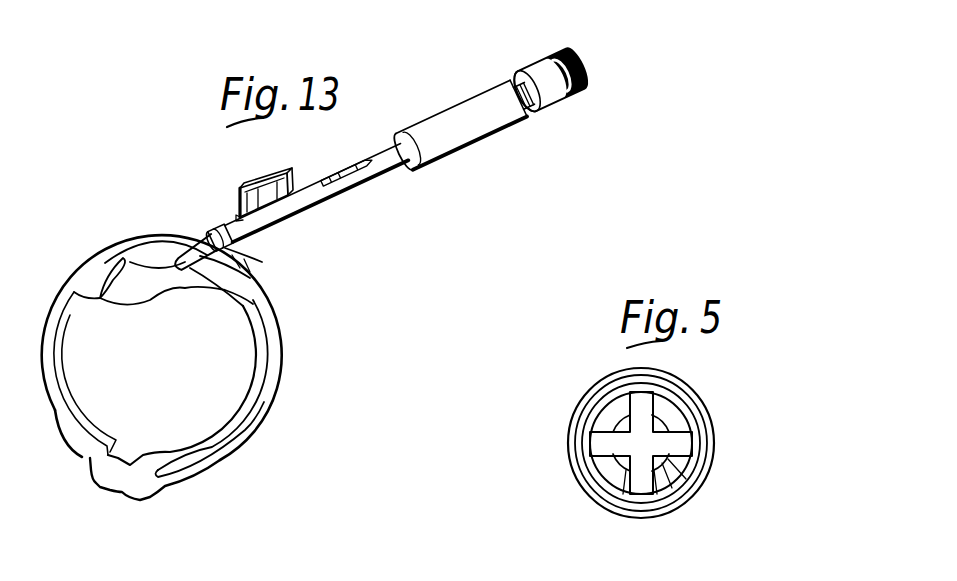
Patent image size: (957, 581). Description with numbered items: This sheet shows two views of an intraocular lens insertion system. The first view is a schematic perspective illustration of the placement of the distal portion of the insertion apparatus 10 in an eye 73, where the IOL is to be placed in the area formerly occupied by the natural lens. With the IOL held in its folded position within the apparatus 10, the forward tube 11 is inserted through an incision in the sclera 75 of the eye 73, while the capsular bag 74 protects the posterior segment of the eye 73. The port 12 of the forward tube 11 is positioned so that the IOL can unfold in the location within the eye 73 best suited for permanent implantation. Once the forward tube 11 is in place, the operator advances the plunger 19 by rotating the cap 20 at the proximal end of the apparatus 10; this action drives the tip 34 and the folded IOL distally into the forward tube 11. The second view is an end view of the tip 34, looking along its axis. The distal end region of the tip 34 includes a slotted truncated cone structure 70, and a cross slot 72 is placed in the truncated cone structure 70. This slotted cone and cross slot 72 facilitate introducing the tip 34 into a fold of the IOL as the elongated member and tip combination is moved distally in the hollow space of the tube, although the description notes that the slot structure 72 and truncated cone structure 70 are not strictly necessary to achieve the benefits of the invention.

In FIG. 13, the apparatus 10 is at (408, 181).
In FIG. 13, the forward tube 11 is at (260, 261).
In FIG. 13, the port 12 is at (143, 249).
In FIG. 13, the plunger 19 is at (537, 114).
In FIG. 13, the cap 20 is at (584, 88).
In FIG. 5, the tip 34 is at (706, 398).
In FIG. 5, the slotted truncated cone structure 70 is at (671, 462).
In FIG. 5, the cross slot 72 is at (594, 441).
In FIG. 13, the eye 73 is at (269, 418).
In FIG. 13, the capsular bag 74 is at (172, 290).
In FIG. 13, the sclera 75 is at (163, 233).